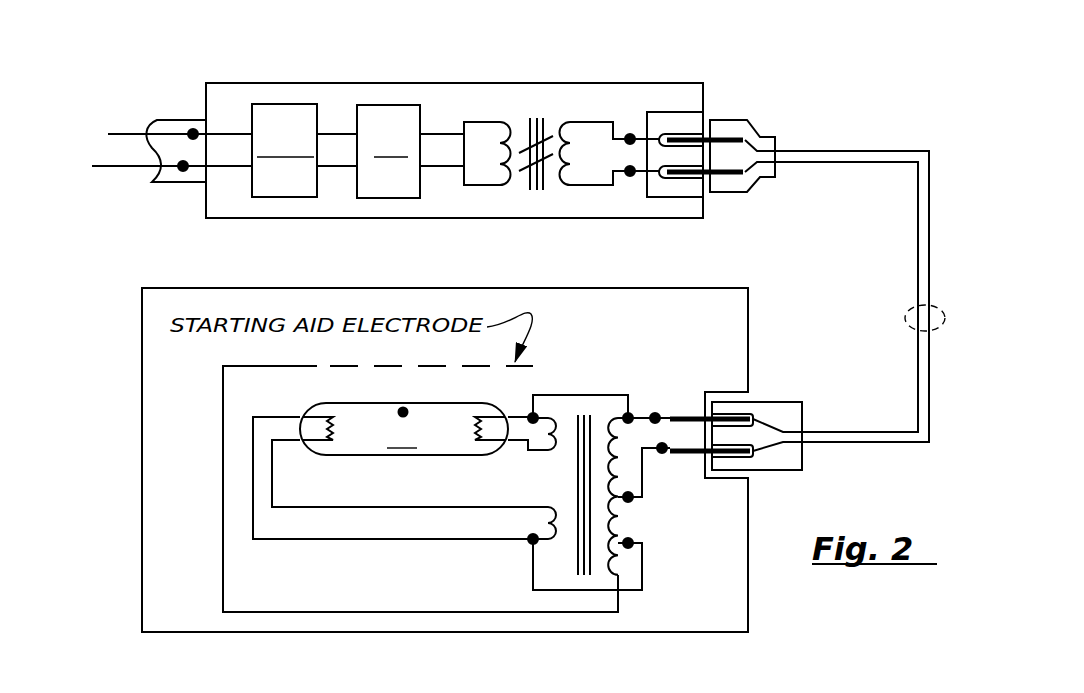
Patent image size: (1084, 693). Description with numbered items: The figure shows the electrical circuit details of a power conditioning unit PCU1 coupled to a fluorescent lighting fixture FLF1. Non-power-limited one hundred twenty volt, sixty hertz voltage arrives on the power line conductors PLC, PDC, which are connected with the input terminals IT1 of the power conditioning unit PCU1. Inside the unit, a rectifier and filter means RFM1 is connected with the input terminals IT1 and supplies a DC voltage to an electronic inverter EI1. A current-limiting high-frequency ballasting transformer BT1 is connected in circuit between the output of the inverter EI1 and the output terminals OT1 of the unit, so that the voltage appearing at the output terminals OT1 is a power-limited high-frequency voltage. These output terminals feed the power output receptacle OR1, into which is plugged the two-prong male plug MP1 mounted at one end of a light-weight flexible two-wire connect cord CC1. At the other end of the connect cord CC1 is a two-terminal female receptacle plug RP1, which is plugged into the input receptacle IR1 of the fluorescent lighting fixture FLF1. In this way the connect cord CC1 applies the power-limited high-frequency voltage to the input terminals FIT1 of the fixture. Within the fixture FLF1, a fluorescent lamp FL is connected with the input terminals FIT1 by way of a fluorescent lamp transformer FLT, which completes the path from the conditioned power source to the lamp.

The power conditioning unit PCU1 is at (444, 78).
The power line conductors PLC is at (107, 165).
The power line conductor PDC is at (190, 183).
The input terminals IT1 is at (183, 163).
The rectifier and filter means RFM1 is at (284, 150).
The electronic inverter EI1 is at (388, 151).
The current-limiting high-frequency ballasting transformer BT1 is at (542, 112).
The output terminals OT1 is at (627, 166).
The power output receptacle OR1 is at (703, 108).
The two-prong male plug MP1 is at (766, 190).
The two-wire connect cord CC1 is at (903, 320).
The fluorescent lighting fixture FLF1 is at (366, 277).
The fluorescent lamp FL is at (404, 429).
The fluorescent lamp transformer FLT is at (570, 477).
The input terminals of fluorescent lighting fixture FIT1 is at (663, 443).
The input receptacle IR1 is at (733, 480).
The two-terminal female receptacle plug RP1 is at (801, 392).